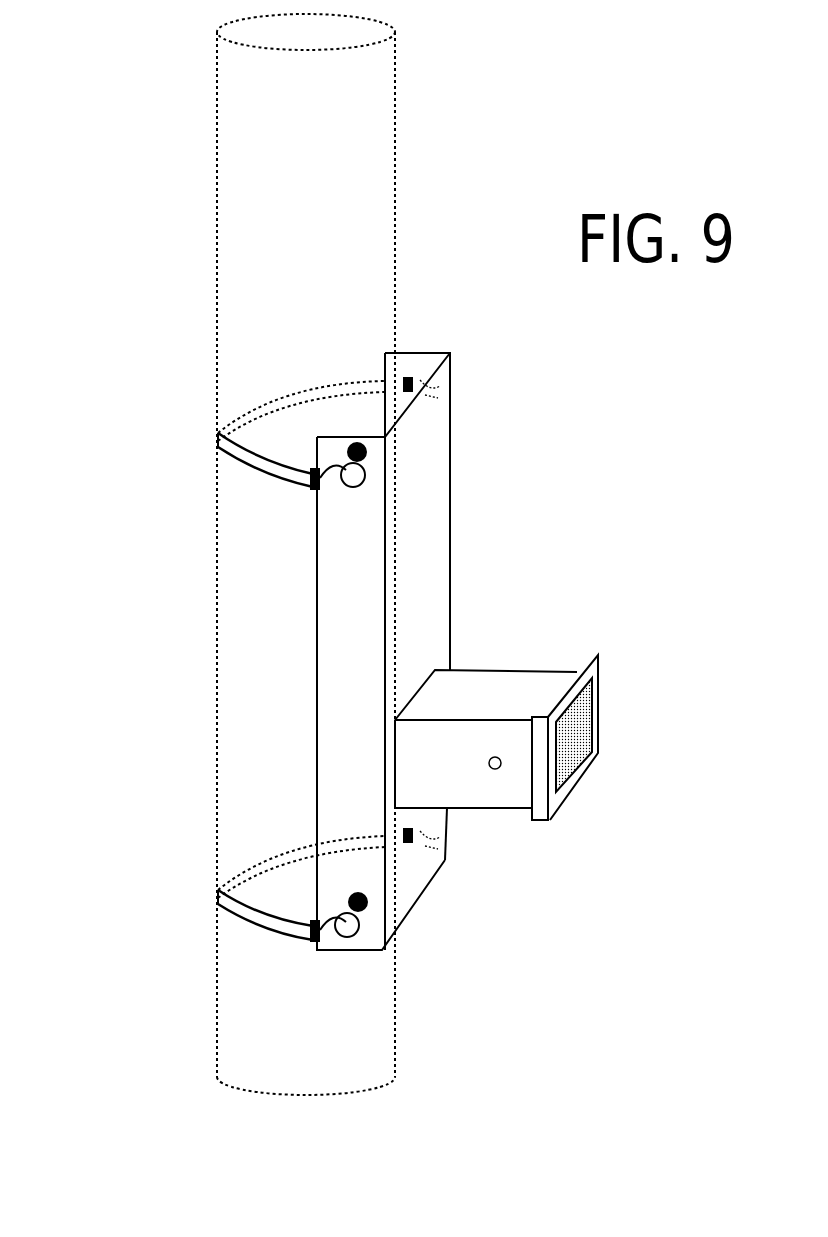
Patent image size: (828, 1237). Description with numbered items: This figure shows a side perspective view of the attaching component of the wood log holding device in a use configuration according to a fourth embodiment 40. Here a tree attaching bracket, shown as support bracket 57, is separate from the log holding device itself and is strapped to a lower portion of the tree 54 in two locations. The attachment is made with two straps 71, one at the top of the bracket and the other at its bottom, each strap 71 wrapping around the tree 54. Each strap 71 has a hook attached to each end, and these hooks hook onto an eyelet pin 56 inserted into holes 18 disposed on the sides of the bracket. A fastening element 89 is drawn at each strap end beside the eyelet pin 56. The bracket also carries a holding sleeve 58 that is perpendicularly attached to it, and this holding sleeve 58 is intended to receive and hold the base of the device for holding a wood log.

The embodiment 40 is at (128, 226).
The tree 54 is at (353, 202).
The eyelet pin 56 is at (363, 473).
The support bracket 57 is at (420, 597).
The holding sleeve 58 is at (502, 785).
The strap 71 is at (250, 463).
The strap clamp 89 is at (343, 488).
The holes 18 is at (496, 757).